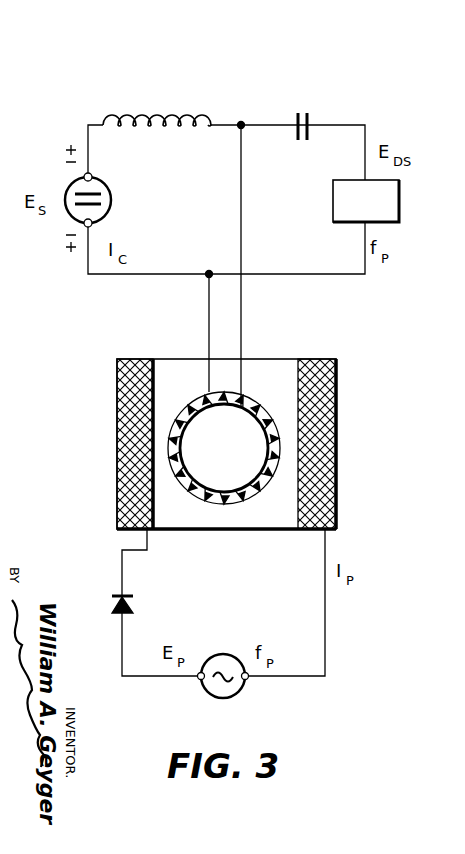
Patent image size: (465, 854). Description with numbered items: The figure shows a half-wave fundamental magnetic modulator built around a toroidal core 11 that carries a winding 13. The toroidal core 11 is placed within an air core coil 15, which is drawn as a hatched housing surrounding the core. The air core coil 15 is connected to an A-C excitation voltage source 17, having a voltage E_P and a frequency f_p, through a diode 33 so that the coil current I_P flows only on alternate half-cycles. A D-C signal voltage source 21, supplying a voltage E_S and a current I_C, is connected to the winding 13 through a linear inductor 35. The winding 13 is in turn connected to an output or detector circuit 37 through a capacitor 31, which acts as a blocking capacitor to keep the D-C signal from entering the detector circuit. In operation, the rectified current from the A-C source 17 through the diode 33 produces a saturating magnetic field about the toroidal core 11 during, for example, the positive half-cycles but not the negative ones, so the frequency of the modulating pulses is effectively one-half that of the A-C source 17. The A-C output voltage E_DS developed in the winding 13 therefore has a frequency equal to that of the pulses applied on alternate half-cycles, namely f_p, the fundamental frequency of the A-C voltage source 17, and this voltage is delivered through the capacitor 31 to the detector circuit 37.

The toroidal core 11 is at (222, 404).
The winding 13 is at (253, 402).
The air core coil 15 is at (336, 388).
The A-C excitation voltage source 17 is at (244, 690).
The D-C signal voltage source 21 is at (111, 200).
The capacitor 31 is at (310, 120).
The diode 33 is at (112, 610).
The linear inductor 35 is at (185, 119).
The output or detector circuit 37 is at (399, 198).